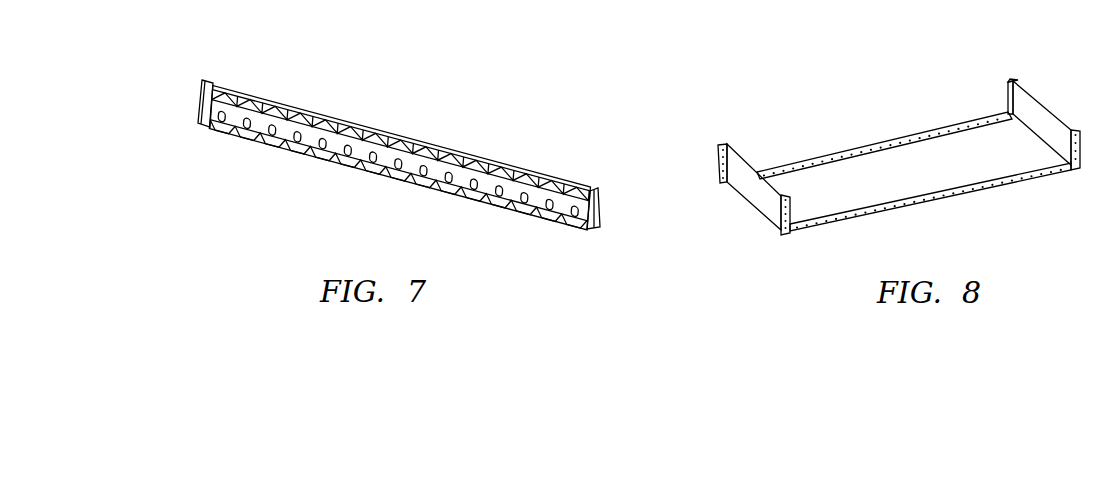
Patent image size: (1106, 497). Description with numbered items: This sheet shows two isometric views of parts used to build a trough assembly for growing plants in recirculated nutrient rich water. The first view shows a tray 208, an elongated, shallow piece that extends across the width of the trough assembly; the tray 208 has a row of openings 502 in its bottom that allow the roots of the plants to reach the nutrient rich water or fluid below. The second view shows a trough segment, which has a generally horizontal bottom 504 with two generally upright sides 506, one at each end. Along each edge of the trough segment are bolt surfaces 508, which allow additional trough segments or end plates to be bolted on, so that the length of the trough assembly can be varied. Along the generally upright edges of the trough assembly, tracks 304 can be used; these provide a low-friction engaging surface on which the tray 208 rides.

In FIG. 7, the tray 208 is at (399, 129).
In FIG. 7, the opening 502 is at (377, 205).
In FIG. 8, the track 304 is at (899, 144).
In FIG. 8, the upright side 506 is at (742, 158).
In FIG. 8, the bottom 504 is at (914, 184).
In FIG. 8, the bolt surface 508 is at (930, 209).